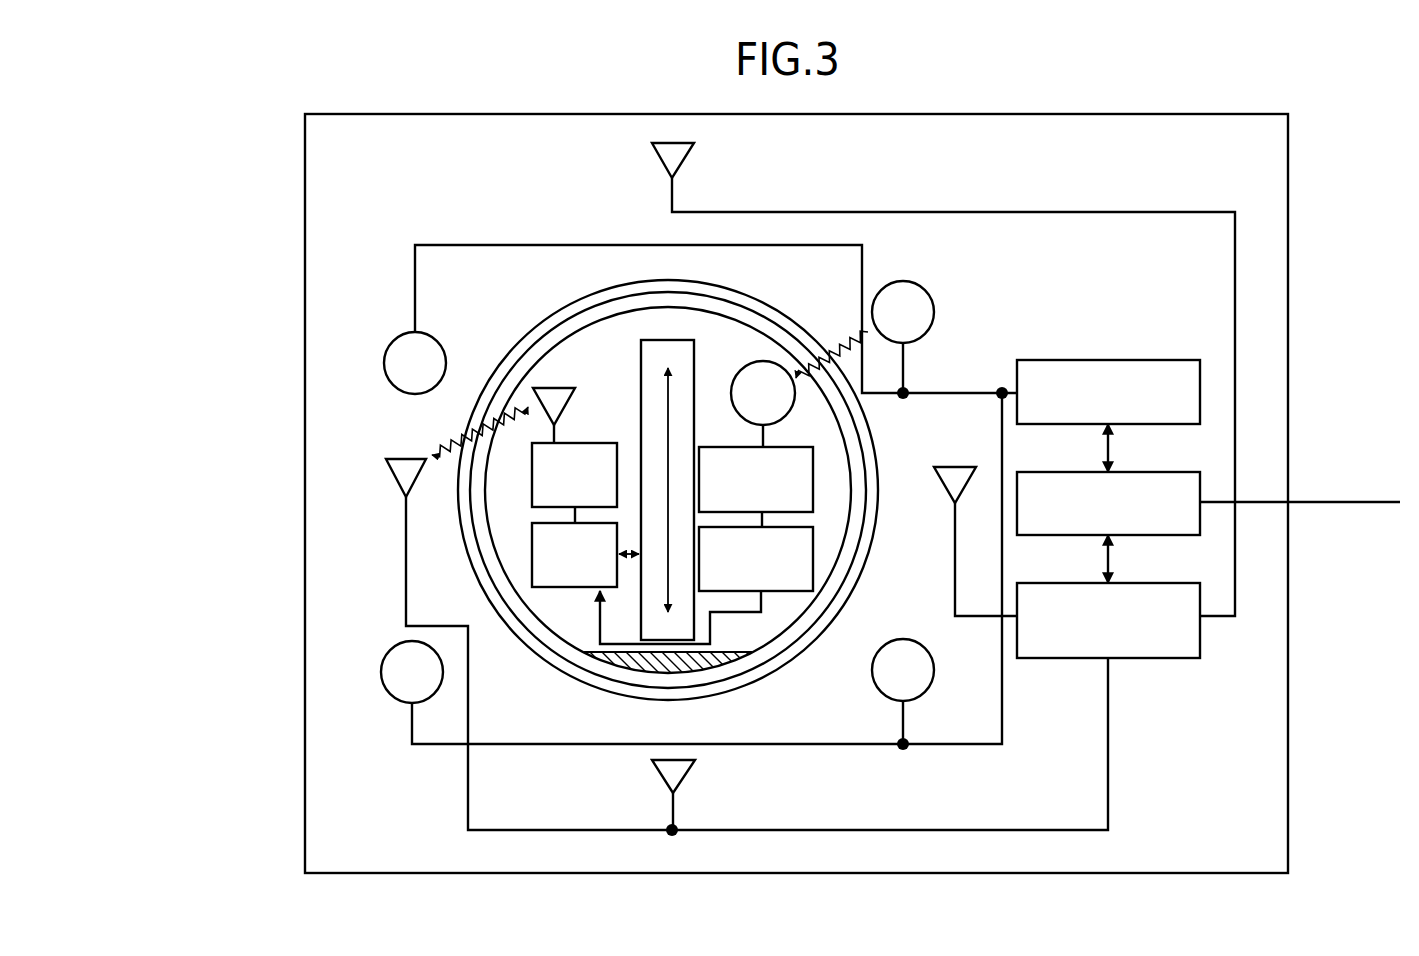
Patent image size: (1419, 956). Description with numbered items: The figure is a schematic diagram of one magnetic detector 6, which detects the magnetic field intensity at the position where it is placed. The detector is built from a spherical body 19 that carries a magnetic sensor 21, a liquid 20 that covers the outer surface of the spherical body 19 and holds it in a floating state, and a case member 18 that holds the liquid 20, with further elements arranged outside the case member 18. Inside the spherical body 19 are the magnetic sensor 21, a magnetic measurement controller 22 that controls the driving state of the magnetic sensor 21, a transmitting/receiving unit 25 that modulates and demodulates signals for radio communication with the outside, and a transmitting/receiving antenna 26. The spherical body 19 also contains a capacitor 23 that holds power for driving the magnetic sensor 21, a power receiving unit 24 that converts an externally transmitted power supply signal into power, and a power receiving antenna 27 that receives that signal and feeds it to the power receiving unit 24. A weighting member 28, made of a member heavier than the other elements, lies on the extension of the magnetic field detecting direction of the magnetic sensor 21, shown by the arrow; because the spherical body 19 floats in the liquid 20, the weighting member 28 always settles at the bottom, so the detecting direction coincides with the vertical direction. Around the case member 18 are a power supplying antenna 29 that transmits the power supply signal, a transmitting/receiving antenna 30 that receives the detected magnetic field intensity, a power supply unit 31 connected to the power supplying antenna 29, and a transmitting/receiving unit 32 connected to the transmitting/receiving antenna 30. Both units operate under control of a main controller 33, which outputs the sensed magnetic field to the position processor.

The magnetic detector 6 is at (1194, 114).
The case member 18 is at (752, 673).
The spherical body 19 is at (843, 437).
The liquid 20 is at (838, 590).
The magnetic sensor 21 is at (668, 340).
The magnetic measurement controller 22 is at (537, 570).
The capacitor 23 is at (813, 546).
The power receiving unit 24 is at (813, 472).
The transmitting/receiving unit 25 is at (537, 495).
The transmitting/receiving antenna 26 is at (575, 402).
The power receiving antenna 27 is at (775, 366).
The weighting member 28 is at (681, 656).
The power supplying antenna 29 is at (935, 312).
The transmitting/receiving antenna 30 is at (388, 482).
The power supply unit 31 is at (1164, 360).
The transmitting/receiving unit 32 is at (1164, 583).
The main controller 33 is at (1164, 472).